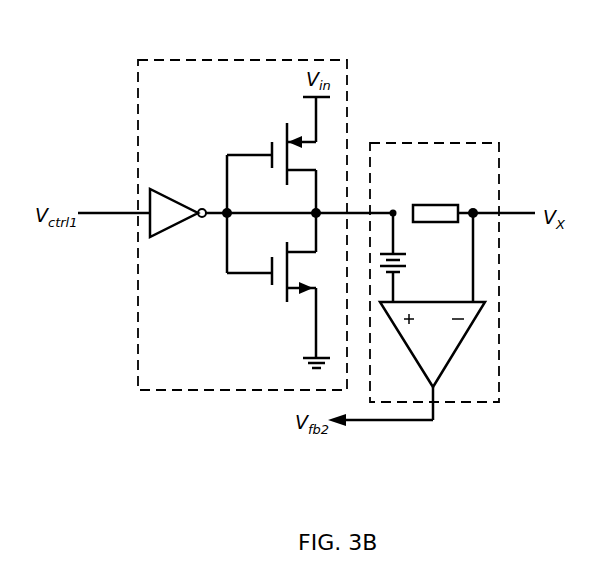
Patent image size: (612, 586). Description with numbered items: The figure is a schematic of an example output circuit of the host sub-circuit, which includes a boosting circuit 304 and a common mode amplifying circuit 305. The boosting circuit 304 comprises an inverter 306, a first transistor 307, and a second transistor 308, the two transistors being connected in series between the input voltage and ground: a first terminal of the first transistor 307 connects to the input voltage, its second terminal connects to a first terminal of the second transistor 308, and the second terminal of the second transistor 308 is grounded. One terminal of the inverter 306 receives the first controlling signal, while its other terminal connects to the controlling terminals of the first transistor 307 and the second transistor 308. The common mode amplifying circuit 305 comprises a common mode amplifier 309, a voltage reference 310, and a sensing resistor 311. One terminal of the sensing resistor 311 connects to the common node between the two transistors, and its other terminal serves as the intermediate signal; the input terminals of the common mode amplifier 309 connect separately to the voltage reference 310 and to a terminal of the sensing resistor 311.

The boosting circuit 304 is at (192, 85).
The common mode amplifying circuit 305 is at (467, 157).
The inverter 306 is at (158, 207).
The first transistor 307 is at (301, 154).
The second transistor 308 is at (301, 272).
The common mode amplifier 309 is at (448, 353).
The voltage reference 310 is at (411, 257).
The sensing resistor 311 is at (438, 215).